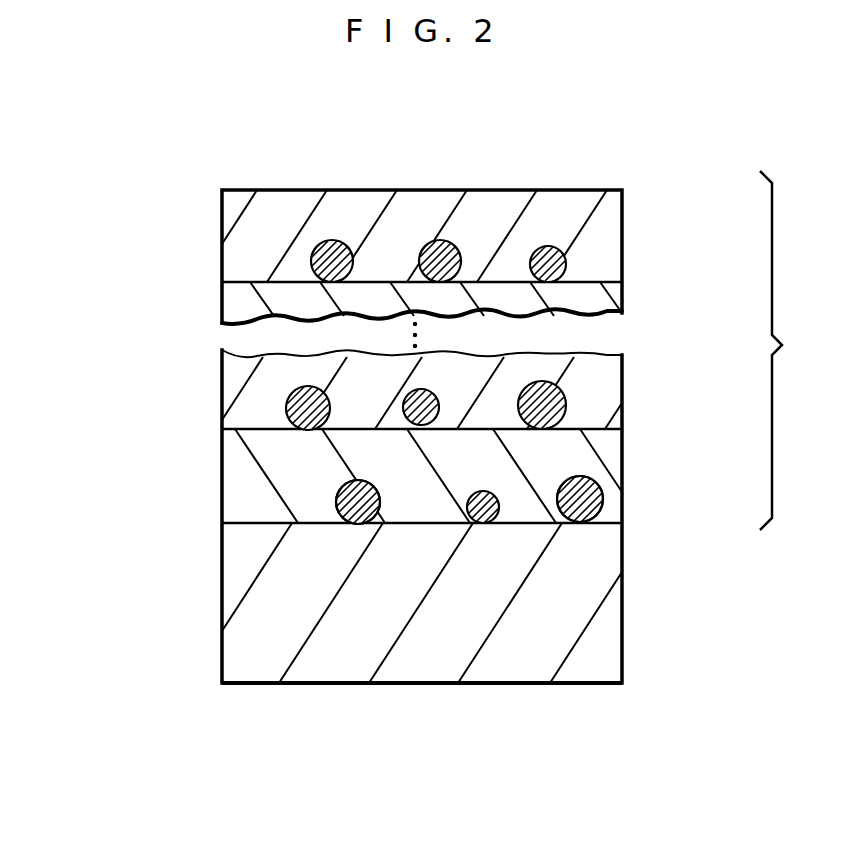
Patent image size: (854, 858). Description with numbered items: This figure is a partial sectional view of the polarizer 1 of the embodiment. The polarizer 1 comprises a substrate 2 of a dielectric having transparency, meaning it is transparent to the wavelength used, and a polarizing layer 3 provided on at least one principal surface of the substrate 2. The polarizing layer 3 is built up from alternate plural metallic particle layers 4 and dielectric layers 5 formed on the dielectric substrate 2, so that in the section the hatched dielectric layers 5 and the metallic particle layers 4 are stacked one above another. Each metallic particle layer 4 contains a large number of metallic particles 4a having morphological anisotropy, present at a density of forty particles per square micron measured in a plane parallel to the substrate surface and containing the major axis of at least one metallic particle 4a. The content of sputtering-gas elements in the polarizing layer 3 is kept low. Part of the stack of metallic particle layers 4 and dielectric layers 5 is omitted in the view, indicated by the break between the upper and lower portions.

The polarizer 1 is at (160, 395).
The substrate 2 is at (608, 613).
The polarizing layer 3 is at (465, 350).
The metallic particle layer 4 is at (582, 260).
The metallic particle 4a is at (587, 490).
The dielectric layer 5 is at (607, 220).